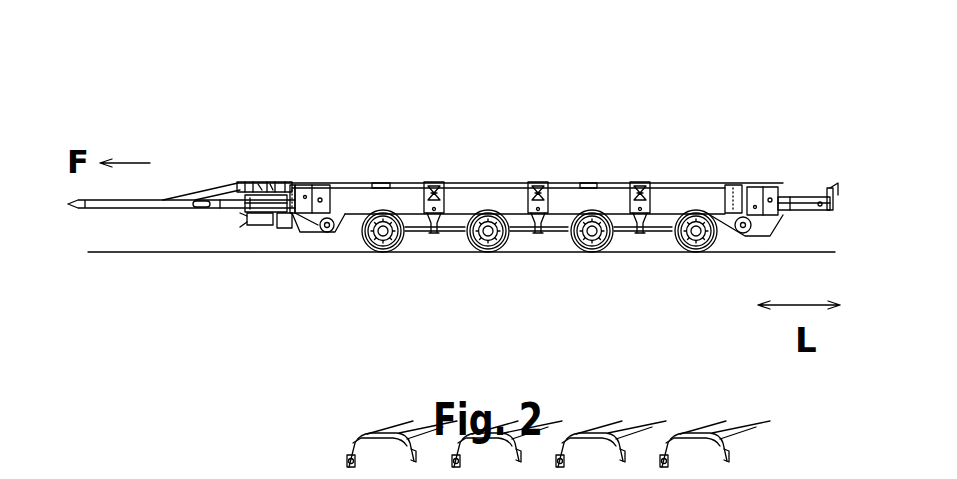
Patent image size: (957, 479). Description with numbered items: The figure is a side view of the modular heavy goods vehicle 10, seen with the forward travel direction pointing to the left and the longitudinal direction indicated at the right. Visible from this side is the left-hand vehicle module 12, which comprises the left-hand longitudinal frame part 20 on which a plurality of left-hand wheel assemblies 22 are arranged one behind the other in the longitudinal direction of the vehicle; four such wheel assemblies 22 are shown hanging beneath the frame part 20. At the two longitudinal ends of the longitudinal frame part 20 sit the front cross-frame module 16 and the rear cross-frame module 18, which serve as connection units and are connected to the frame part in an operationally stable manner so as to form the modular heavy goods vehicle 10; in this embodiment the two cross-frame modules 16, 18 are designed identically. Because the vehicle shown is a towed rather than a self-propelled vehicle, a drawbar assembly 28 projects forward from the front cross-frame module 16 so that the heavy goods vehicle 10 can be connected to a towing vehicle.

The heavy goods vehicle 10 is at (158, 99).
The left-hand vehicle module 12 is at (485, 190).
The front cross-frame module 16 is at (307, 190).
The rear cross-frame module 18 is at (760, 198).
The left-hand longitudinal frame part 20 is at (537, 136).
The left-hand wheel assembly 22 is at (380, 243).
The drawbar assembly 28 is at (155, 203).